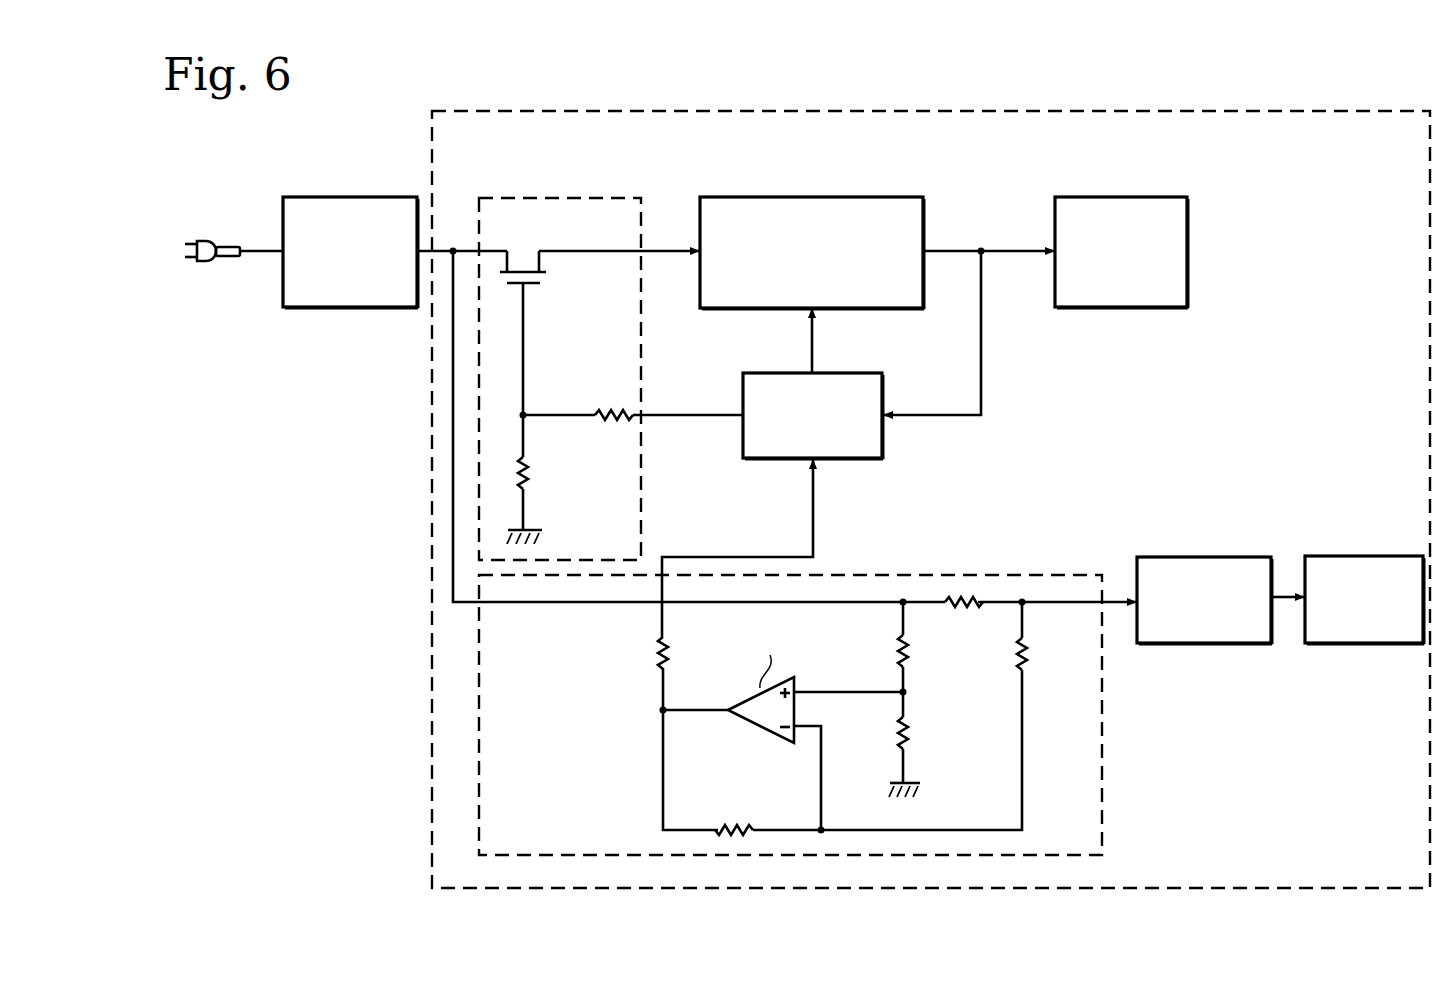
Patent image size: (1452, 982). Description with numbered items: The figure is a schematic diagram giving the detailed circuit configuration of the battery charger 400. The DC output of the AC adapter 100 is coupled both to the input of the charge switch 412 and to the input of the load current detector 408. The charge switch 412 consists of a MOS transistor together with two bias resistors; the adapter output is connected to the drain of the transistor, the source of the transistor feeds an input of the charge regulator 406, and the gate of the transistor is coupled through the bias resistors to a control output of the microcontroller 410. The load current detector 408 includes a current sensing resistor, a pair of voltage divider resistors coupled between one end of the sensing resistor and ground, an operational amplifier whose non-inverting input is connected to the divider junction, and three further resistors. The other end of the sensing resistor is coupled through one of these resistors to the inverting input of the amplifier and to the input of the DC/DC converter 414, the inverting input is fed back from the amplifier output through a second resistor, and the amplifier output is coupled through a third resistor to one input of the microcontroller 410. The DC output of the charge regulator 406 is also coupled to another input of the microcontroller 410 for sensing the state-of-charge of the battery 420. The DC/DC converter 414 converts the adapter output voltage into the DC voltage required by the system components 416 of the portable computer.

The AC adapter 100 is at (343, 196).
The battery charger 400 is at (922, 110).
The charge switch 412 is at (565, 197).
The charge regulator 406 is at (803, 196).
The battery 420 is at (1117, 196).
The microcontroller 410 is at (884, 447).
The load current detector 408 is at (960, 575).
The DC/DC converter 414 is at (1210, 556).
The system components 416 is at (1365, 556).